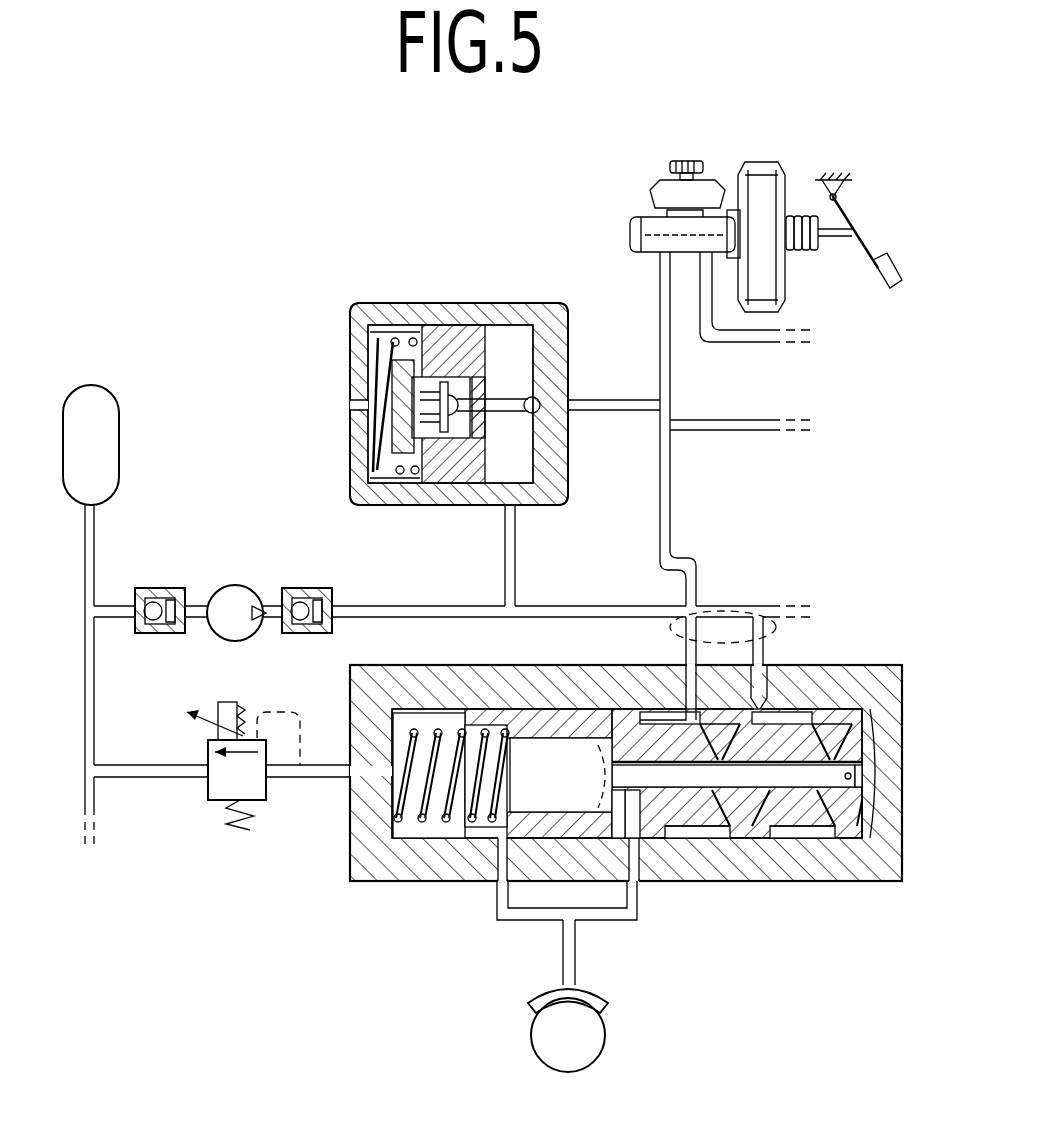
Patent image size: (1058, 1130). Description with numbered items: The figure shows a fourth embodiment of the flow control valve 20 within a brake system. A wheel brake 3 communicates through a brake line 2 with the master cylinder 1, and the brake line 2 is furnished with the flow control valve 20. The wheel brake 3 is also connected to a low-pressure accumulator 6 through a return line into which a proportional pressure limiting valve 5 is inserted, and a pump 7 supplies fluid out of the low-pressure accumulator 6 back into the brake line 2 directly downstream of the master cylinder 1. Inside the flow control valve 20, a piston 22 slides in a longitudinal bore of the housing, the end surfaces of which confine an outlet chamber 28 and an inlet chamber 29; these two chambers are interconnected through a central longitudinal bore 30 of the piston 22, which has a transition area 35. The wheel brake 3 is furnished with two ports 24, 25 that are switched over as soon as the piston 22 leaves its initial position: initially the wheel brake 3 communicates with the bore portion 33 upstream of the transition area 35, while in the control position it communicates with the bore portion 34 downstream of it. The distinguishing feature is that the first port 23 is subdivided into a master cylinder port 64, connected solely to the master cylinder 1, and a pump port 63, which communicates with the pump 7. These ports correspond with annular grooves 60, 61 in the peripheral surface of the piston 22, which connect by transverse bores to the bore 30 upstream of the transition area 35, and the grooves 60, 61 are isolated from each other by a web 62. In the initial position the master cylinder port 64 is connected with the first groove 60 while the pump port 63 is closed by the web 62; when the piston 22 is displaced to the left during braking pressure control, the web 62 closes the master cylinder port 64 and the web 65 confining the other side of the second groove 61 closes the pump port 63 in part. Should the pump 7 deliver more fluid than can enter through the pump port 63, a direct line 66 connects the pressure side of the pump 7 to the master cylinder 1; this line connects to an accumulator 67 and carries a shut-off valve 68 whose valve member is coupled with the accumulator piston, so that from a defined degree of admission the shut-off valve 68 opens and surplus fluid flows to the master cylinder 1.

The master cylinder 1 is at (626, 208).
The brake line 2 is at (663, 505).
The wheel brake 3 is at (603, 1003).
The proportional pressure limiting valve 5 is at (250, 797).
The low-pressure accumulator 6 is at (105, 411).
The pump 7 is at (225, 602).
The flow control valve 20 is at (816, 893).
The piston 22 is at (766, 812).
The first port 23 is at (714, 612).
The port 24 is at (639, 850).
The port 25 is at (497, 860).
The outlet chamber 28 is at (440, 830).
The inlet chamber 29 is at (878, 780).
The central longitudinal bore 30 is at (850, 805).
The bore portion 33 is at (704, 778).
The bore portion 34 is at (537, 792).
The transition area 35 is at (588, 747).
The first annular groove 60 is at (673, 718).
The second annular groove 61 is at (828, 735).
The web 62 is at (810, 718).
The pump port 63 is at (766, 700).
The master cylinder port 64 is at (691, 700).
The web 65 is at (886, 740).
The direct line 66 is at (619, 400).
The accumulator 67 is at (513, 348).
The shut-off valve 68 is at (542, 412).